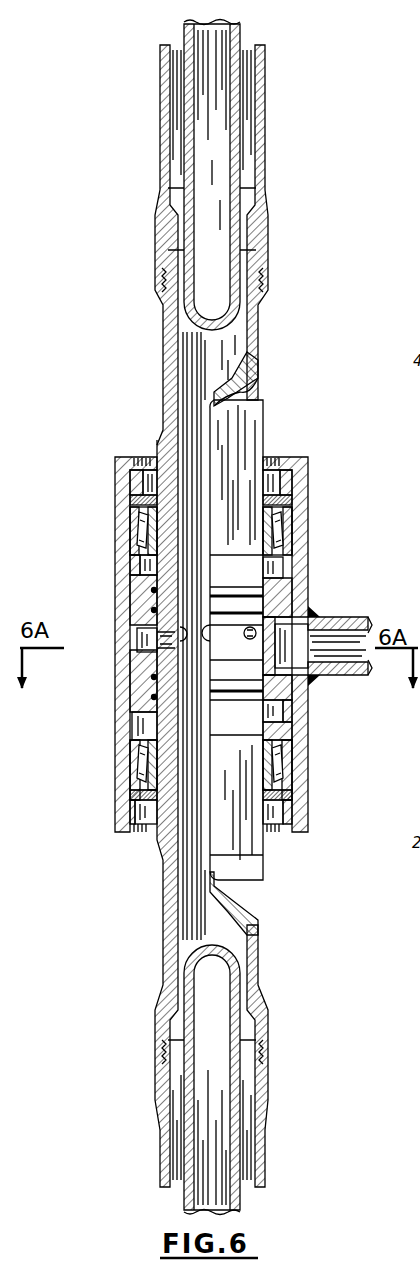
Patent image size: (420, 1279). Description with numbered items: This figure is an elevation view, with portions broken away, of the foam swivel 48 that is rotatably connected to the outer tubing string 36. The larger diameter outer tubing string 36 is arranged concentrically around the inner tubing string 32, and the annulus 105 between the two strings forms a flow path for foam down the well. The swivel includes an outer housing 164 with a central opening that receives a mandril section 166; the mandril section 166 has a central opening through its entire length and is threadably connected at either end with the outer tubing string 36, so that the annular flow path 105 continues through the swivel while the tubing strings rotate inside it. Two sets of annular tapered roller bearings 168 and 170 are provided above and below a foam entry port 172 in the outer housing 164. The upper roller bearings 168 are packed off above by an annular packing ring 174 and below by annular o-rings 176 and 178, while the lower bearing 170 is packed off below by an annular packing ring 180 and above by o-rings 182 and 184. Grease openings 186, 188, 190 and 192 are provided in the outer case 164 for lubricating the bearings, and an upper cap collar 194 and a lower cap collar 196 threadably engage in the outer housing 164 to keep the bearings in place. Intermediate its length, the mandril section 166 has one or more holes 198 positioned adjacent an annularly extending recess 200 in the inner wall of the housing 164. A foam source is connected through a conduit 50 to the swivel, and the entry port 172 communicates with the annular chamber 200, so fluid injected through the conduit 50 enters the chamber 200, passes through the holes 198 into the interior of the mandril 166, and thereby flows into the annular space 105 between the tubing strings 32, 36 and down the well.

The inner tubing string 32 is at (242, 33).
The outer tubing string 36 is at (160, 90).
The annulus 105 is at (180, 172).
The foam swivel 48 is at (113, 445).
The mandril section 166 is at (257, 393).
The upper cap collar 194 is at (305, 458).
The annular packing ring 174 is at (122, 492).
The annular tapered roller bearings 168 is at (295, 530).
The grease opening 190 is at (116, 562).
The grease opening 192 is at (310, 566).
The annular o-ring 176 is at (151, 589).
The outer housing 164 is at (116, 625).
The annular o-ring 178 is at (151, 609).
The foam entry port 172 is at (296, 640).
The conduit 50 is at (362, 615).
The annularly extending recess 200 is at (140, 636).
The o-ring 182 is at (151, 677).
The o-ring 184 is at (150, 697).
The grease opening 186 is at (150, 712).
The holes 198 is at (305, 702).
The grease opening 188 is at (305, 724).
The annular tapered roller bearings 170 is at (296, 757).
The annular packing ring 180 is at (298, 792).
The lower cap collar 196 is at (125, 812).